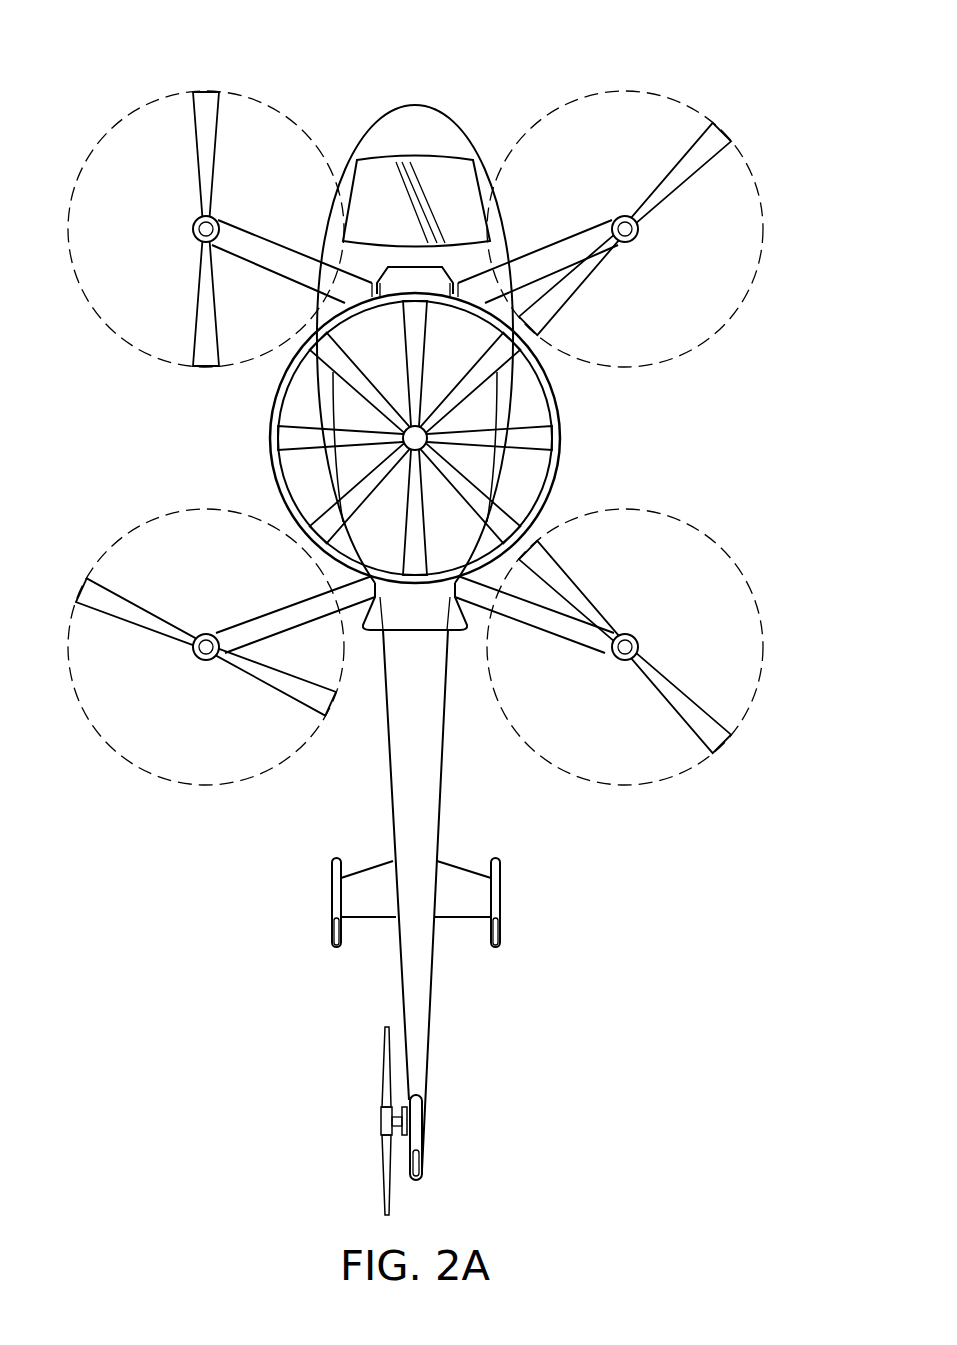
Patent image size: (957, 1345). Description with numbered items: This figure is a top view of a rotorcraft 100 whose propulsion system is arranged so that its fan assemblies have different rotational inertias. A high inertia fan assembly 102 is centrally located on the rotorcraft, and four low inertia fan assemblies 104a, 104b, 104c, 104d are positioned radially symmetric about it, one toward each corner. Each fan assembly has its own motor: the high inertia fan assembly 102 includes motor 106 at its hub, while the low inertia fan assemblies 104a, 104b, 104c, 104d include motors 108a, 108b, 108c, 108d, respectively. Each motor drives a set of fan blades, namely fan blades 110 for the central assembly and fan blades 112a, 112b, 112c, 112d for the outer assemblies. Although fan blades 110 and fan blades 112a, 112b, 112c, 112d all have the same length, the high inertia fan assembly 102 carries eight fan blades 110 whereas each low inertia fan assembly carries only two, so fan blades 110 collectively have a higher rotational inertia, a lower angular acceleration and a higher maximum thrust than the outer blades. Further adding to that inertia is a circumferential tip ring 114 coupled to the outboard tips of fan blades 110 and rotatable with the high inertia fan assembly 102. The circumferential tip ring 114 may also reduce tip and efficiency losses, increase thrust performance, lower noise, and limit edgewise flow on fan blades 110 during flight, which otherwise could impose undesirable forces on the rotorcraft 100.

The rotorcraft 100 is at (108, 68).
The high inertia fan assembly 102 is at (262, 437).
The low inertia fan assembly 104a is at (218, 188).
The low inertia fan assembly 104b is at (132, 628).
The low inertia fan assembly 104c is at (682, 686).
The low inertia fan assembly 104d is at (684, 188).
The motor 106 is at (405, 438).
The motor 108a is at (193, 230).
The motor 108b is at (203, 661).
The motor 108c is at (630, 640).
The motor 108d is at (634, 242).
The fan blades 110 is at (505, 515).
The fan blades 112a is at (197, 297).
The fan blades 112b is at (182, 595).
The fan blades 112c is at (668, 705).
The fan blades 112d is at (655, 185).
The circumferential tip ring 114 is at (558, 403).